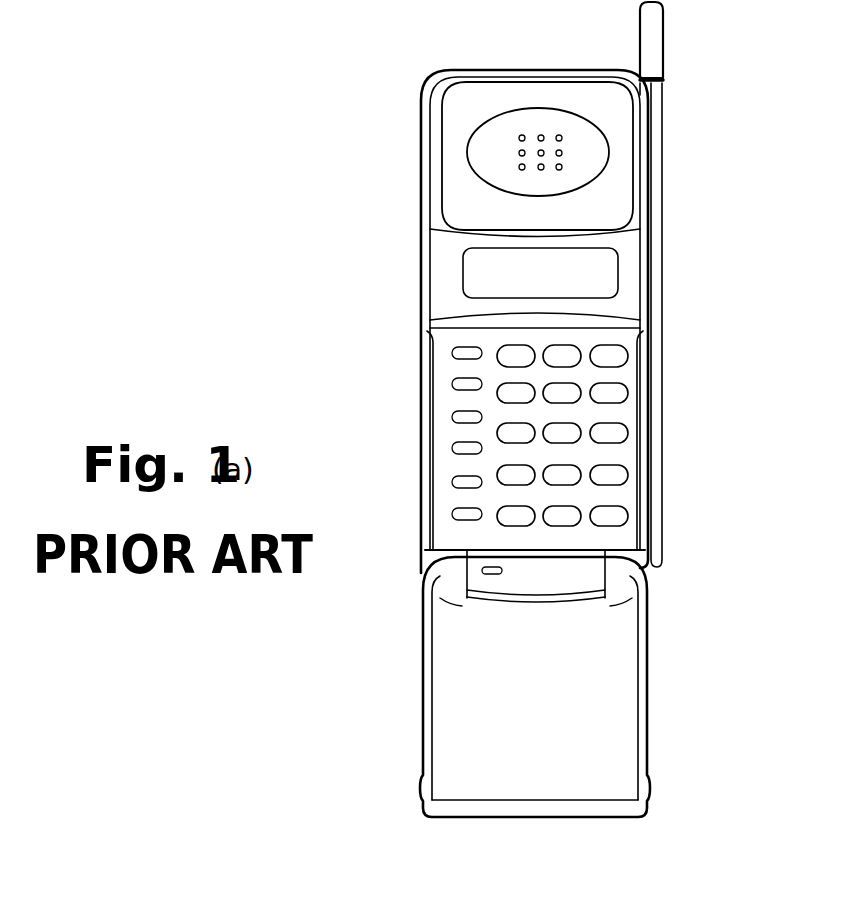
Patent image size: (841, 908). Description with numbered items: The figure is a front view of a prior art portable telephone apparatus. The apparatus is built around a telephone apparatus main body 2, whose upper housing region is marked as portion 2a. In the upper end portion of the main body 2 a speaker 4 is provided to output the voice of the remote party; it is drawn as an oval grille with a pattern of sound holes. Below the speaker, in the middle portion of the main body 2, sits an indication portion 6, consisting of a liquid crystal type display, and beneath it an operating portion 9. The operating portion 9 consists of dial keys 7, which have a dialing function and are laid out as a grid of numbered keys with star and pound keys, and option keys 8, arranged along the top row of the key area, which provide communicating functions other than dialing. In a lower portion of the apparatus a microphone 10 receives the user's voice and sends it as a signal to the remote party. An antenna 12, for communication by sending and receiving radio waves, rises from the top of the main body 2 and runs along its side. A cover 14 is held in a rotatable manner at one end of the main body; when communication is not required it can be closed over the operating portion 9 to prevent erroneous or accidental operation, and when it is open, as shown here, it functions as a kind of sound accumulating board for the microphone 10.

The telephone apparatus main body 2 is at (547, 70).
The upper housing 2a is at (642, 200).
The speaker 4 is at (495, 128).
The indication portion 6 is at (470, 272).
The dial keys 7 is at (620, 437).
The option keys 8 is at (615, 357).
The operating portion 9 is at (623, 418).
The microphone 10 is at (488, 573).
The antenna 12 is at (655, 48).
The cover 14 is at (613, 738).